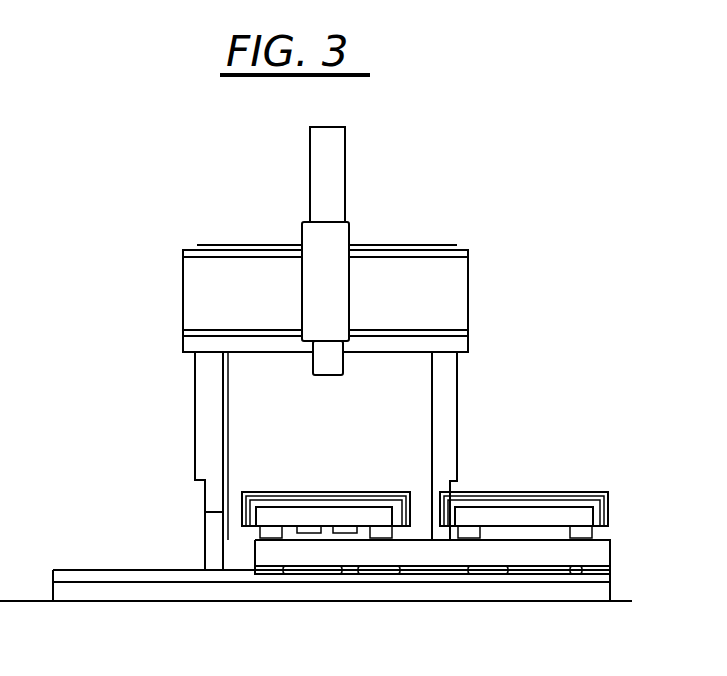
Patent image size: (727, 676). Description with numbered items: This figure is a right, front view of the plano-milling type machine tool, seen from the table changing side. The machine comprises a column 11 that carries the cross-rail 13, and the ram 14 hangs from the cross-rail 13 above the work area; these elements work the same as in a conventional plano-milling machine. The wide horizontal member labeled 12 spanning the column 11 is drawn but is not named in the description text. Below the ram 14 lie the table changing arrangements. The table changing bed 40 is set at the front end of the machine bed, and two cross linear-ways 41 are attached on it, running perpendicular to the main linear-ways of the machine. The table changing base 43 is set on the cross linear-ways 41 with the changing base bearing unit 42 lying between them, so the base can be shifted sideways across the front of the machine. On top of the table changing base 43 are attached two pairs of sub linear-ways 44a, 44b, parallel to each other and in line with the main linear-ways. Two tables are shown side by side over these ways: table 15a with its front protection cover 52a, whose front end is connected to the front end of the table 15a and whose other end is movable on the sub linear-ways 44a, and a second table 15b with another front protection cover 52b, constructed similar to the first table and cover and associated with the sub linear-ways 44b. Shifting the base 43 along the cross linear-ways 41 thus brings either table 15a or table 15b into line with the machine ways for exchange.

The column 11 is at (459, 384).
The beam 12 is at (470, 300).
The cross-rail 13 is at (350, 230).
The ram 14 is at (344, 367).
The table 15a is at (283, 492).
The table 15b is at (497, 492).
The front protection cover 52a is at (370, 492).
The front protection cover 52b is at (575, 492).
The table changing bed 40 is at (121, 603).
The cross linear-ways 41 is at (128, 570).
The changing base bearing unit 42 is at (262, 580).
The table changing base 43 is at (612, 553).
The sub linear-ways 44a is at (372, 540).
The sub linear-ways 44b is at (585, 540).